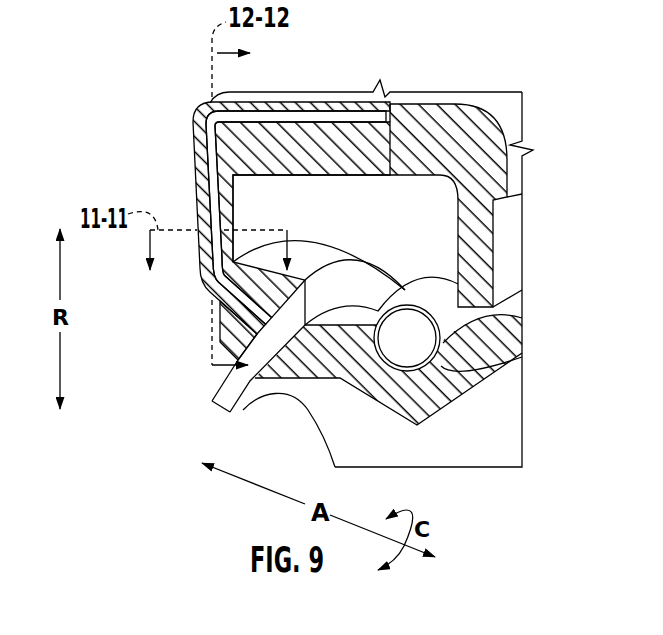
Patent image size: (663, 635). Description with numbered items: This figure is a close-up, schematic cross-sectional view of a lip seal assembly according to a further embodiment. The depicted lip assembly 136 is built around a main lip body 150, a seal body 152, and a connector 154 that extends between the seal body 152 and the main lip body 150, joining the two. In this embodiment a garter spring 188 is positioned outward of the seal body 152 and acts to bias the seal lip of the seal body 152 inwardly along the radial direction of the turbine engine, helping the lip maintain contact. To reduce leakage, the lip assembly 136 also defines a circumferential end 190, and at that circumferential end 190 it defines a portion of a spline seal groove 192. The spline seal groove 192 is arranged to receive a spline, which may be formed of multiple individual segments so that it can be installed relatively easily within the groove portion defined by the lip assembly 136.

The lip assembly 136 is at (126, 110).
The main lip body 150 is at (423, 122).
The seal body 152 is at (322, 372).
The connector 154 is at (195, 173).
The garter spring 188 is at (424, 349).
The circumferential end 190 is at (318, 139).
The spline seal groove 192 is at (261, 116).